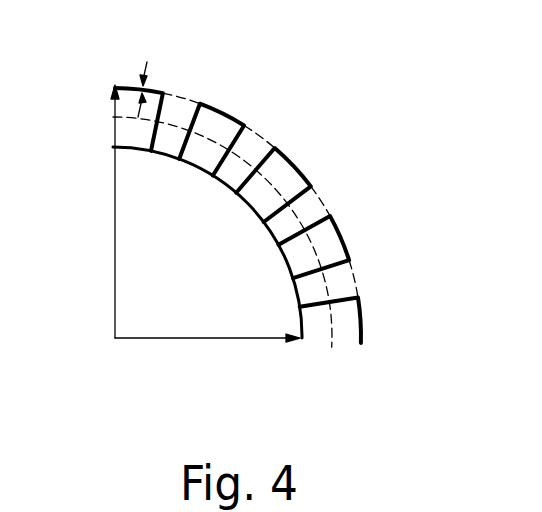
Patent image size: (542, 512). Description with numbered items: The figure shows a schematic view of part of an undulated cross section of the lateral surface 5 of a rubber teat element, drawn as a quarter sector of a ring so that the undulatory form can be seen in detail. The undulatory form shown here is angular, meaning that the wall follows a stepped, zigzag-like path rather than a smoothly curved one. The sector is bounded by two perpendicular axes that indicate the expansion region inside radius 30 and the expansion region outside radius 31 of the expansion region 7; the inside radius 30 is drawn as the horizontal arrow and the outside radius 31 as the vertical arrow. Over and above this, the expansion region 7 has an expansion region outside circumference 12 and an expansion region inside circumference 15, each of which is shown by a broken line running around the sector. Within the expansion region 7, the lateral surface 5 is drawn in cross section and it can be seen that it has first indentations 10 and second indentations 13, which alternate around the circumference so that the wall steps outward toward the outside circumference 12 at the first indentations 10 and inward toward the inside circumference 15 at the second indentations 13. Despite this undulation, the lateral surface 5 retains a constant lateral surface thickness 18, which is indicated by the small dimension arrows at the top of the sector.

The lateral surface 5 is at (398, 270).
The expansion region 7 is at (390, 211).
The first indentations 10 is at (237, 173).
The expansion region outside circumference 12 is at (292, 162).
The second indentations 13 is at (322, 250).
The expansion region inside circumference 15 is at (200, 166).
The lateral surface thickness 18 is at (162, 75).
The expansion region inside radius 30 is at (165, 342).
The expansion region outside radius 31 is at (115, 233).